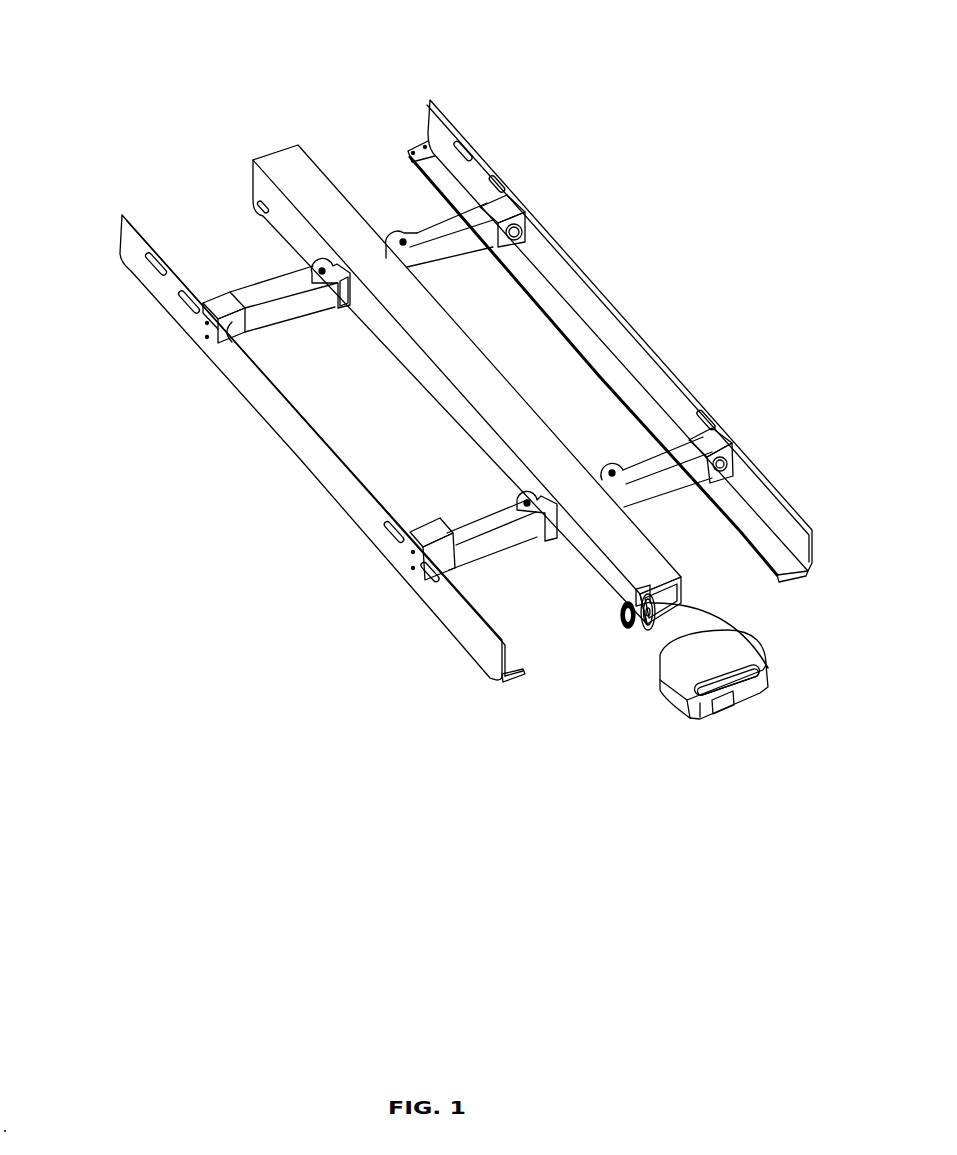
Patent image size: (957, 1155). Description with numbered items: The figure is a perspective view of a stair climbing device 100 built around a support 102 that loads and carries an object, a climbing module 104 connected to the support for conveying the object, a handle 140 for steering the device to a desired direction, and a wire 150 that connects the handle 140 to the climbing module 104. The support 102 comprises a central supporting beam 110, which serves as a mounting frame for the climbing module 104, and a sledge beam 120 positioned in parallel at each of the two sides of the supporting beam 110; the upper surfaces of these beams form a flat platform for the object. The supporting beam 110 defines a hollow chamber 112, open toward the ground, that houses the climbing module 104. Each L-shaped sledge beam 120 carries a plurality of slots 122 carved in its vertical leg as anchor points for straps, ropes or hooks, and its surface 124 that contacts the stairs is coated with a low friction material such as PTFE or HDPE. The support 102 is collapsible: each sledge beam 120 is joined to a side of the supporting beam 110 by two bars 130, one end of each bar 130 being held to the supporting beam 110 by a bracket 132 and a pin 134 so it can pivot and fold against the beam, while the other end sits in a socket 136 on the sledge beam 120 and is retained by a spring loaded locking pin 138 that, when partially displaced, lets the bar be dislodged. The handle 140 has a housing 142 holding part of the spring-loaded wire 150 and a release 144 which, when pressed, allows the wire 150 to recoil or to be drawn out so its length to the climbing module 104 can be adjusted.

The stair climbing device 100 is at (400, 66).
The support 102 is at (533, 757).
The climbing module 104 is at (658, 620).
The supporting beam 110 is at (580, 538).
The hollow chamber 112 is at (638, 637).
The sledge beam 120 is at (487, 640).
The slots 122 is at (153, 255).
The surface 124 is at (810, 572).
The bars 130 is at (487, 540).
The bracket 132 is at (322, 264).
The pin 134 is at (612, 470).
The socket 136 is at (705, 437).
The spring loaded locking pin 138 is at (733, 440).
The handle 140 is at (860, 665).
The housing 142 is at (727, 657).
The release 144 is at (723, 703).
The wire 150 is at (728, 623).